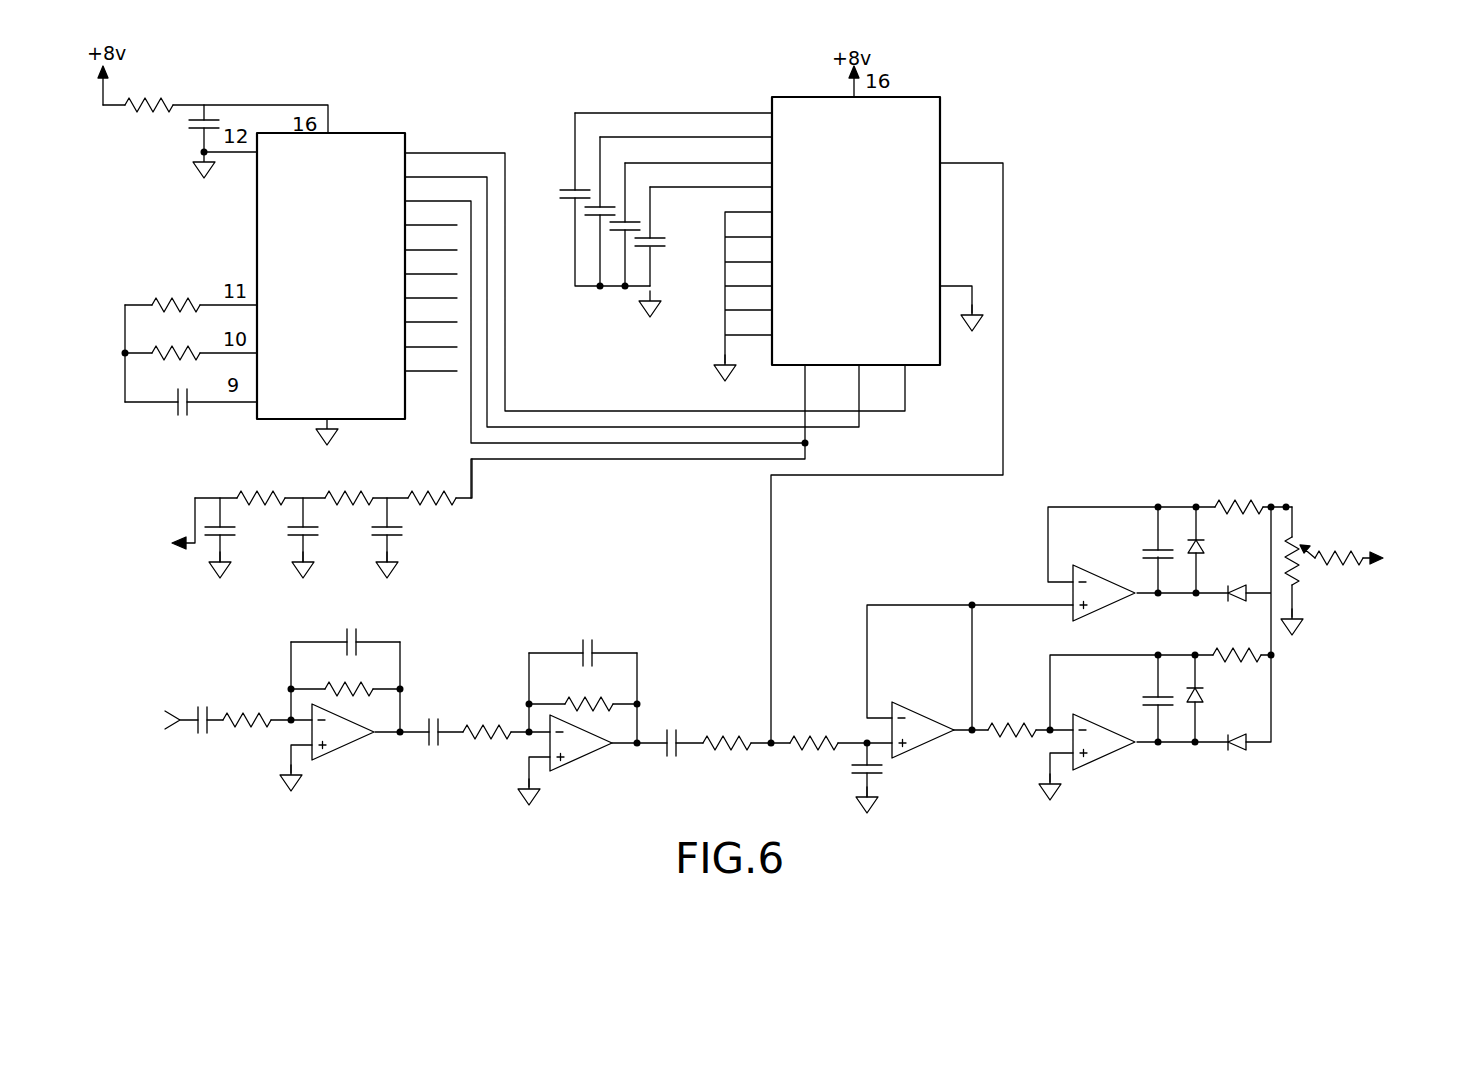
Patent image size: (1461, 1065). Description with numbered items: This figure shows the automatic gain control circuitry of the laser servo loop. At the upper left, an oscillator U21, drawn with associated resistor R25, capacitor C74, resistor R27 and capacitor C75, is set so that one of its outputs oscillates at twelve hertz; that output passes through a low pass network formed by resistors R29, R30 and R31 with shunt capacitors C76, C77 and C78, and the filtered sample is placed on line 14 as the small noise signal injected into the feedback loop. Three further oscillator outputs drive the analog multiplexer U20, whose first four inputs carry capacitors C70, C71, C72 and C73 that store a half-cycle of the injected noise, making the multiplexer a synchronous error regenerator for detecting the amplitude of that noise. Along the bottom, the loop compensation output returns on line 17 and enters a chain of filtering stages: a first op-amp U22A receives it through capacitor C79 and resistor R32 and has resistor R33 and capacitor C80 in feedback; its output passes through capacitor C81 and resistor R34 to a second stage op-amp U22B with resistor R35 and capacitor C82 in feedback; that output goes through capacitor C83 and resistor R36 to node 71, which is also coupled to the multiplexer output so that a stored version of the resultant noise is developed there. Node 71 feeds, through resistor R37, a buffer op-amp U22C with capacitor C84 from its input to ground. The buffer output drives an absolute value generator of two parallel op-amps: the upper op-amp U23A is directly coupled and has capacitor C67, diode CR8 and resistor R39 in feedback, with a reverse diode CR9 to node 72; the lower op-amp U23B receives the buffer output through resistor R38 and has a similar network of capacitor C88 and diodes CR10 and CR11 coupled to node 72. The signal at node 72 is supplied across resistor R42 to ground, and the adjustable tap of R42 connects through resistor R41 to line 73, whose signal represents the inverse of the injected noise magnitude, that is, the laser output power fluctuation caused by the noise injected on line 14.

The line 14 is at (190, 547).
The line 17 is at (185, 716).
The node 71 is at (1003, 416).
The node 72 is at (1287, 505).
The line 73 is at (1367, 563).
The resistor R25 is at (150, 102).
The capacitor C74 is at (200, 132).
The oscillator U21 is at (581, 315).
The resistor R27 is at (180, 300).
The resistor R29 is at (188, 350).
The capacitor C75 is at (178, 412).
The resistor R30 is at (362, 493).
The resistor R31 is at (445, 492).
The capacitor C76 is at (228, 535).
The capacitor C77 is at (311, 535).
The capacitor C78 is at (395, 535).
The analog multiplexer U20 is at (779, 242).
The capacitor C70 is at (580, 185).
The capacitor C71 is at (605, 202).
The capacitor C72 is at (630, 218).
The capacitor C73 is at (655, 235).
The capacitor C79 is at (198, 728).
The resistor R32 is at (262, 708).
The first op-amp U22A is at (345, 754).
The resistor R33 is at (358, 690).
The capacitor C80 is at (356, 640).
The capacitor C81 is at (422, 722).
The resistor R34 is at (502, 727).
The second stage op-amp U22B is at (585, 762).
The resistor R35 is at (596, 705).
The capacitor C82 is at (594, 652).
The capacitor C83 is at (672, 735).
The resistor R36 is at (740, 748).
The resistor R37 is at (800, 738).
The capacitor C84 is at (860, 770).
The buffer op-amp U22C is at (920, 745).
The resistor R38 is at (1000, 725).
The lower op-amp U23B is at (1108, 758).
The capacitor C88 is at (1150, 703).
The diode CR10 is at (1203, 694).
The diode CR11 is at (1236, 752).
The op-amp U23A is at (1098, 573).
The resistor R39 is at (1238, 500).
The capacitor C67 is at (1150, 550).
The diode CR8 is at (1203, 555).
The reverse diode CR9 is at (1238, 602).
The resistor R42 is at (1310, 545).
The resistor R41 is at (1333, 552).